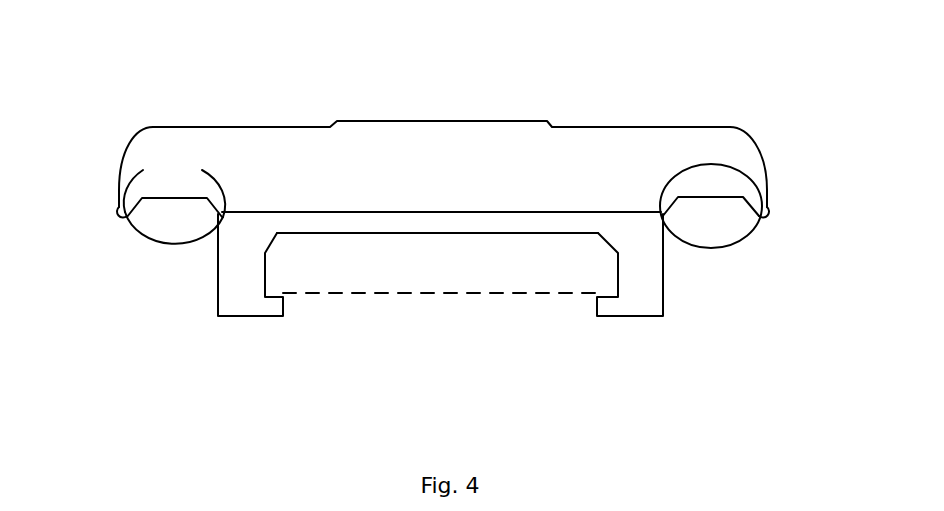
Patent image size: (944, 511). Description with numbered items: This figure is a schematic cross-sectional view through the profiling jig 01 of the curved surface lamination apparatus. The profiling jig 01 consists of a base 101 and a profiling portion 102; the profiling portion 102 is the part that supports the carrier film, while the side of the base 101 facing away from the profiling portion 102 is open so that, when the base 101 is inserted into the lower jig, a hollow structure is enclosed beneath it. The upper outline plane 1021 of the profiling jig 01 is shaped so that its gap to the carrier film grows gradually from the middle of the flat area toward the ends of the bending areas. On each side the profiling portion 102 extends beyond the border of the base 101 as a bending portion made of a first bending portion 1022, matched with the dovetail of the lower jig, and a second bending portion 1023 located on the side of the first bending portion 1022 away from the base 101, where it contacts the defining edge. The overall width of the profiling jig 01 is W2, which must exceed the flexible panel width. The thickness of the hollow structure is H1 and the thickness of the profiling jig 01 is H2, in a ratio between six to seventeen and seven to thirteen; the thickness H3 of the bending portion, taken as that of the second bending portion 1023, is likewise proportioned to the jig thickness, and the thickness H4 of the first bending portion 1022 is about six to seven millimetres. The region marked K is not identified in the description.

The profiling jig 01 is at (92, 58).
The base 101 is at (250, 308).
The profiling portion 102 is at (513, 137).
The outline plane 1021 is at (127, 147).
The first bending portion 1022 is at (152, 245).
The second bending portion 1023 is at (118, 215).
The cavity K is at (453, 255).
The width of the profiling jig W2 is at (764, 35).
The thickness of the hollow structure H1 is at (420, 243).
The thickness of the profiling jig H2 is at (245, 305).
The thickness of the bending portion H3 is at (442, 137).
The thickness of the first bending portion H4 is at (176, 137).